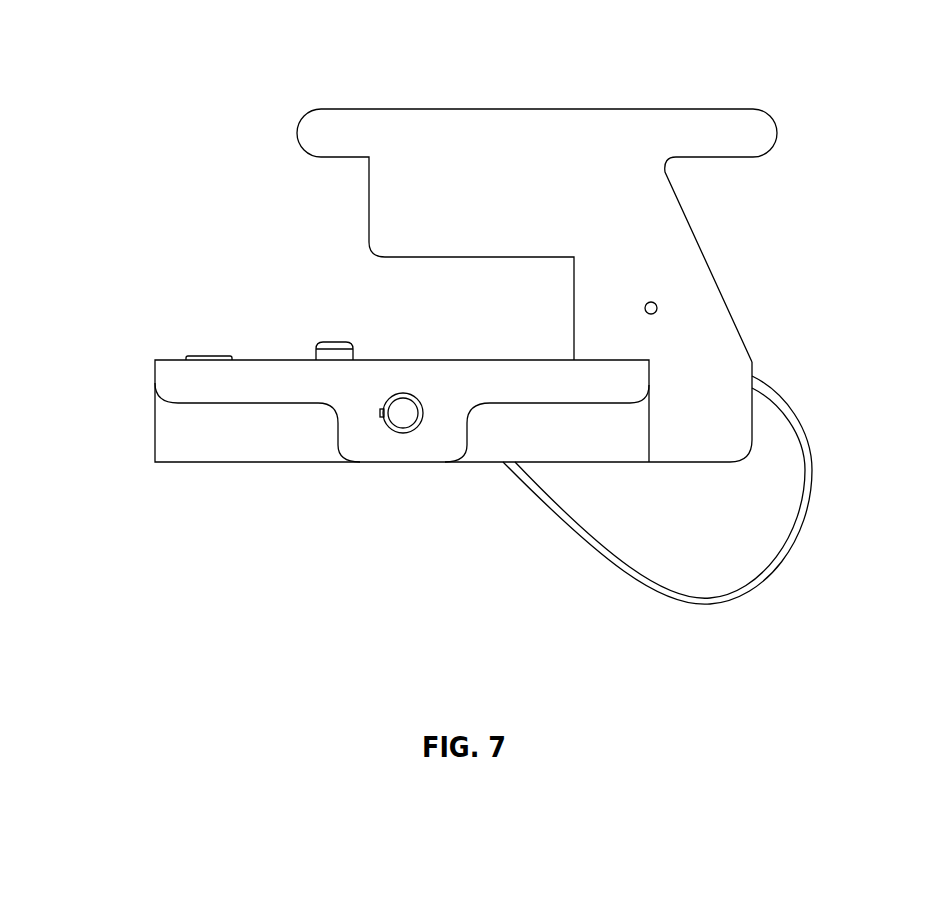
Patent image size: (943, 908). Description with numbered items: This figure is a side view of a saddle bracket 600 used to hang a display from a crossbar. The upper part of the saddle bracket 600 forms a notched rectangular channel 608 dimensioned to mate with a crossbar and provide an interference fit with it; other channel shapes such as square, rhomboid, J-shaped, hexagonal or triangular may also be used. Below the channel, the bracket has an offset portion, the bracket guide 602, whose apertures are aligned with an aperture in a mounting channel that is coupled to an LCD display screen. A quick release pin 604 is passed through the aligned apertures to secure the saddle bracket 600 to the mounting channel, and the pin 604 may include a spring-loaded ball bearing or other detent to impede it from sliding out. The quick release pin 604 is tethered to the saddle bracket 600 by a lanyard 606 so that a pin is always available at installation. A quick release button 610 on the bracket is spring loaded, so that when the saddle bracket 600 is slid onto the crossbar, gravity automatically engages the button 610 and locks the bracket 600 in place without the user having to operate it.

The saddle bracket 600 is at (84, 76).
The bracket guide 602 is at (466, 359).
The quick release pin 604 is at (381, 411).
The lanyard 606 is at (806, 426).
The rectangular channel 608 is at (572, 272).
The quick release button 610 is at (318, 341).